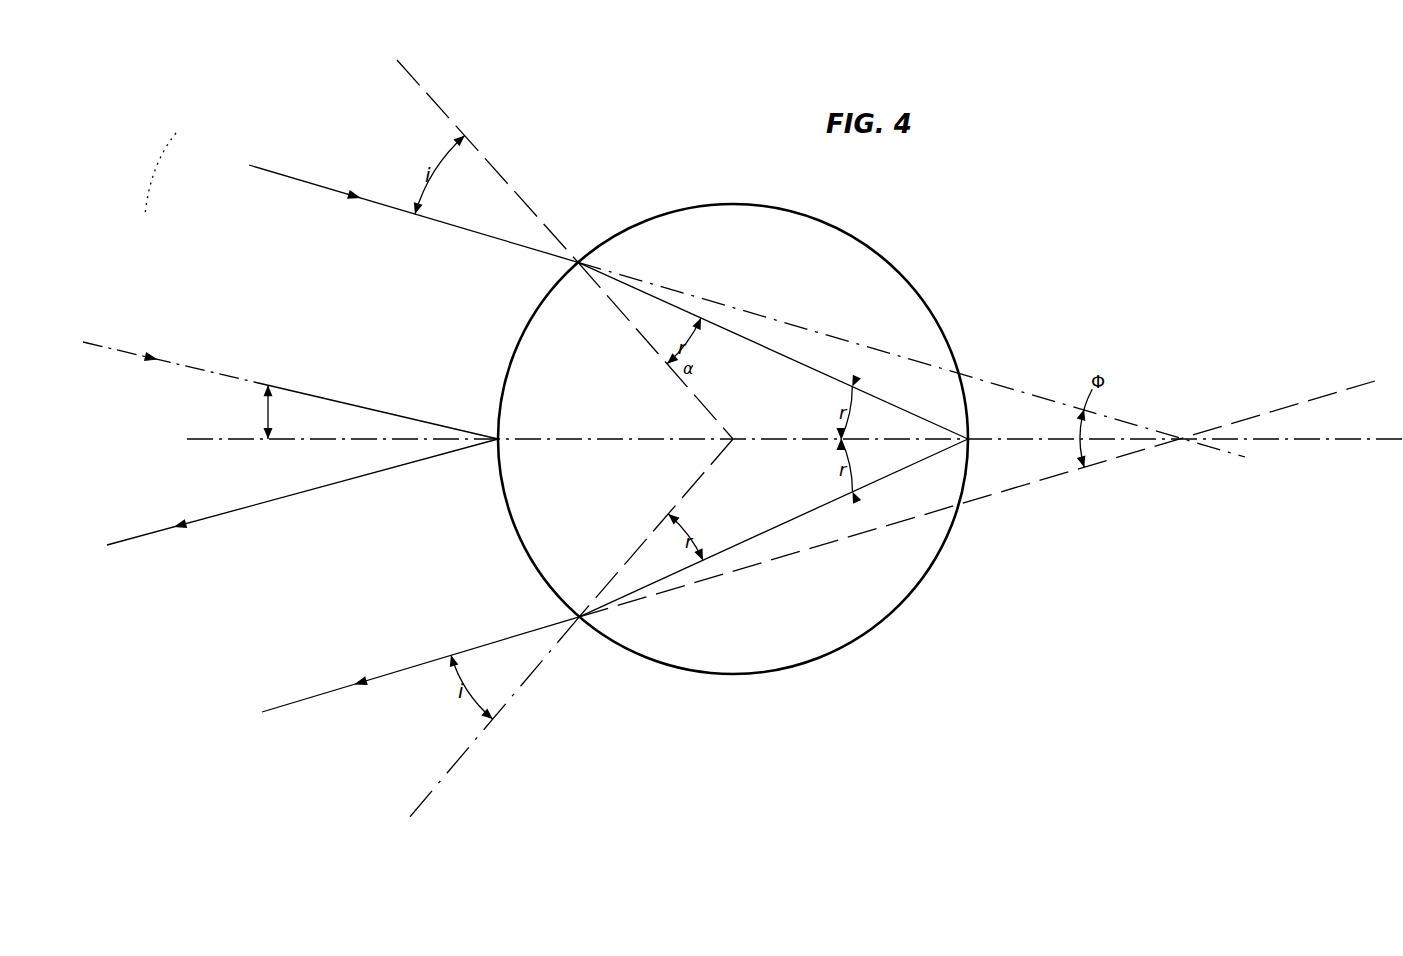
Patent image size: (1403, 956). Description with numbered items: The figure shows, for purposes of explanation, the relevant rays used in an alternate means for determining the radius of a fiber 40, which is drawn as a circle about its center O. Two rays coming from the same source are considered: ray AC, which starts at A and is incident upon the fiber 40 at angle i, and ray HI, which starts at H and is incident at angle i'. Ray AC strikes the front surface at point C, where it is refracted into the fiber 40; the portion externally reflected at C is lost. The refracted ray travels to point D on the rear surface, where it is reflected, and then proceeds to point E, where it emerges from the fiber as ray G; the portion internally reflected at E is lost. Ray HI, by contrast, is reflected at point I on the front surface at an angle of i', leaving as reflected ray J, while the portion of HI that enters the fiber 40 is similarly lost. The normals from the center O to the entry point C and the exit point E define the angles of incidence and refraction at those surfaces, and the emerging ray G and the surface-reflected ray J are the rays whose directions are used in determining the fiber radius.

The fiber 40 is at (912, 592).
The ray AC starting point A is at (346, 183).
The point C on front surface C is at (565, 249).
The point D on rear surface D is at (784, 439).
The point E is at (571, 628).
The emerging ray G is at (314, 695).
The ray HI starting point H is at (146, 347).
The point I on front surface I is at (376, 412).
The reflected ray J is at (146, 535).
The center of fiber O is at (795, 427).